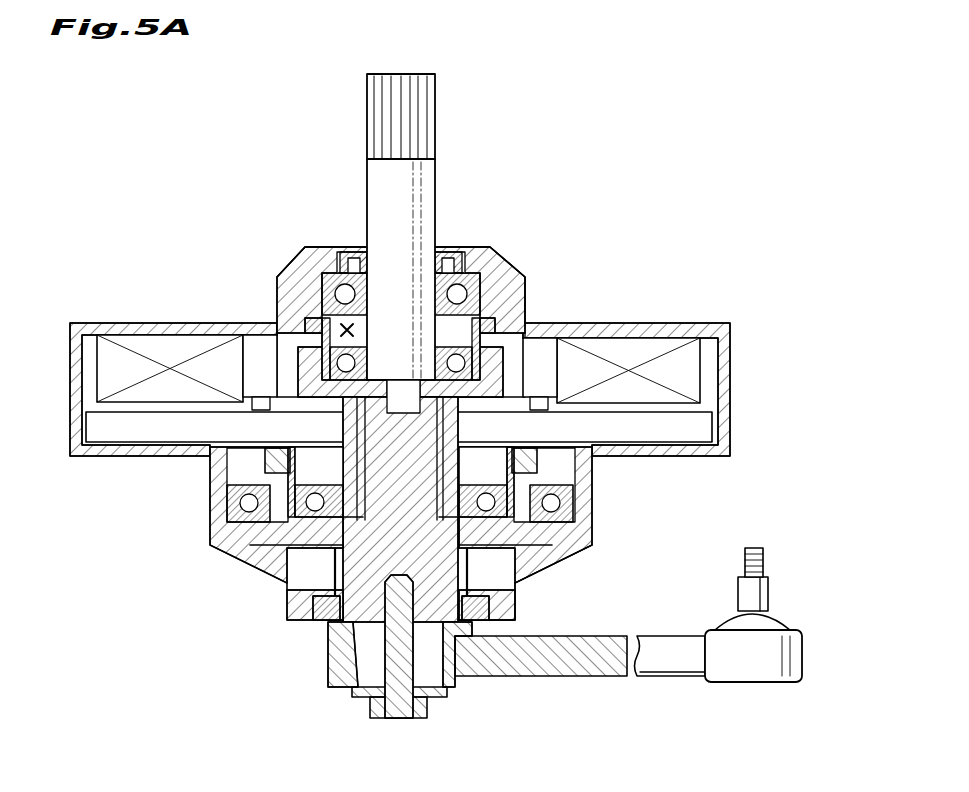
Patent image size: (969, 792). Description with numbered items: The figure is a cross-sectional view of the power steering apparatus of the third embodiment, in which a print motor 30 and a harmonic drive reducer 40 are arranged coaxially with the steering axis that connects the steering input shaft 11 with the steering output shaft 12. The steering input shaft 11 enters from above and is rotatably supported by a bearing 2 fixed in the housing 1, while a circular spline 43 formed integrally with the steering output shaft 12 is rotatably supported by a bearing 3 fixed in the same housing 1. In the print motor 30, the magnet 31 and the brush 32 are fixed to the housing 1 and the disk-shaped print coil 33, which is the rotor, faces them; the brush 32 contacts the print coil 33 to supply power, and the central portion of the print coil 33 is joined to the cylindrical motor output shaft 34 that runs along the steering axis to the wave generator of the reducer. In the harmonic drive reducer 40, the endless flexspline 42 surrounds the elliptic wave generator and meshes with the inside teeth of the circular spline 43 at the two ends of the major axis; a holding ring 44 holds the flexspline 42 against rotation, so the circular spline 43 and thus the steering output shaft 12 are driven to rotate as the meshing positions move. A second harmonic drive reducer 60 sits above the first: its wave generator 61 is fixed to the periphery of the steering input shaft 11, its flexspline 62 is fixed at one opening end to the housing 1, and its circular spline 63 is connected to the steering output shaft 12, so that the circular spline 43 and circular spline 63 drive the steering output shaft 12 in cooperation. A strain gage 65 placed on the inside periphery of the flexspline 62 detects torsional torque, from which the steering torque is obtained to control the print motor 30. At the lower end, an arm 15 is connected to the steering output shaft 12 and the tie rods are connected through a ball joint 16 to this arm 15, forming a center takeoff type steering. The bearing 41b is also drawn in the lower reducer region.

The housing 1 is at (290, 266).
The bearing 2 is at (463, 268).
The bearing 3 is at (574, 499).
The steering input shaft 11 is at (370, 165).
The steering output shaft 12 is at (355, 648).
The arm 15 is at (558, 670).
The ball joint 16 is at (748, 688).
The print motor 30 is at (88, 390).
The magnet 31 is at (146, 333).
The brush 32 is at (253, 343).
The print coil 33 is at (106, 440).
The motor output shaft 34 is at (468, 476).
The harmonic drive reducer 40 is at (272, 556).
The bearing 41b is at (316, 494).
The flexspline 42 is at (262, 468).
The circular spline 43 is at (552, 558).
The holding ring 44 is at (585, 467).
The harmonic drive reducer 60 is at (523, 302).
The wave generator 61 is at (496, 282).
The flexspline 62 is at (277, 288).
The circular spline 63 is at (528, 343).
The strain gage 65 is at (332, 265).